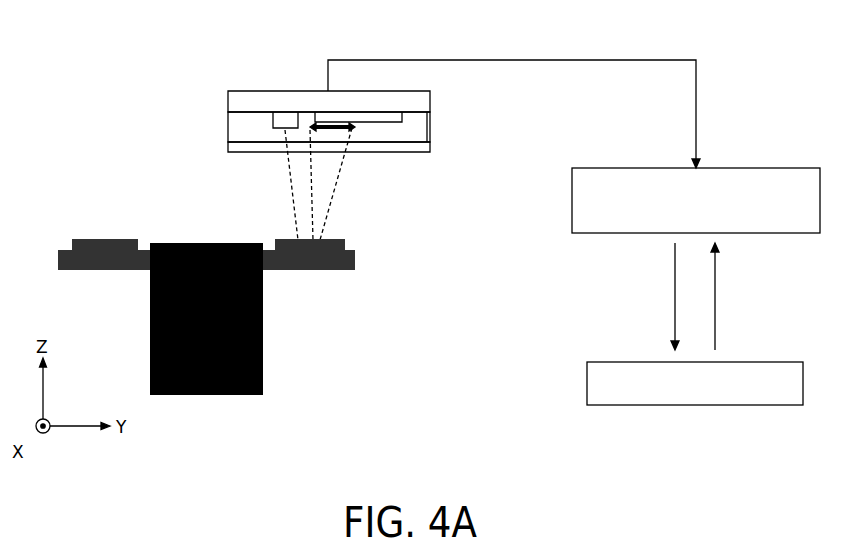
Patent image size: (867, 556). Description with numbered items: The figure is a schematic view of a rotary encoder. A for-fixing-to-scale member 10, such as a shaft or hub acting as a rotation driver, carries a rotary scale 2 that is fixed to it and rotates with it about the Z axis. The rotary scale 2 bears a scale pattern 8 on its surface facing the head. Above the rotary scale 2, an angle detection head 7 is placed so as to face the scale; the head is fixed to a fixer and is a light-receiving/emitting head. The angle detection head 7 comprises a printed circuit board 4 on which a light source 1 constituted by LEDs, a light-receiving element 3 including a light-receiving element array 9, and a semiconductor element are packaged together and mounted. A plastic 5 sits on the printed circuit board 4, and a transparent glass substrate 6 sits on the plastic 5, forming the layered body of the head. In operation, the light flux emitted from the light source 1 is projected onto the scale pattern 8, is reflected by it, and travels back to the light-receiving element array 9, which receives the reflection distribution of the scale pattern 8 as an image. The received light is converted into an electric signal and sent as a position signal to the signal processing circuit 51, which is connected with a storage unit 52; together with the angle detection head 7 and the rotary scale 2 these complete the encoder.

The light source 1 is at (283, 113).
The sample 2 is at (353, 253).
The light receiving element 3 is at (370, 120).
The upper housing layer 4 is at (228, 96).
The middle housing layer 5 is at (228, 140).
The lower housing layer 6 is at (257, 152).
The wiring 7 is at (430, 94).
The gel pad 8 is at (92, 240).
The detection element 9 is at (330, 125).
The heat source block 10 is at (263, 327).
The signal processing circuit 51 is at (735, 168).
The storage unit 52 is at (772, 362).